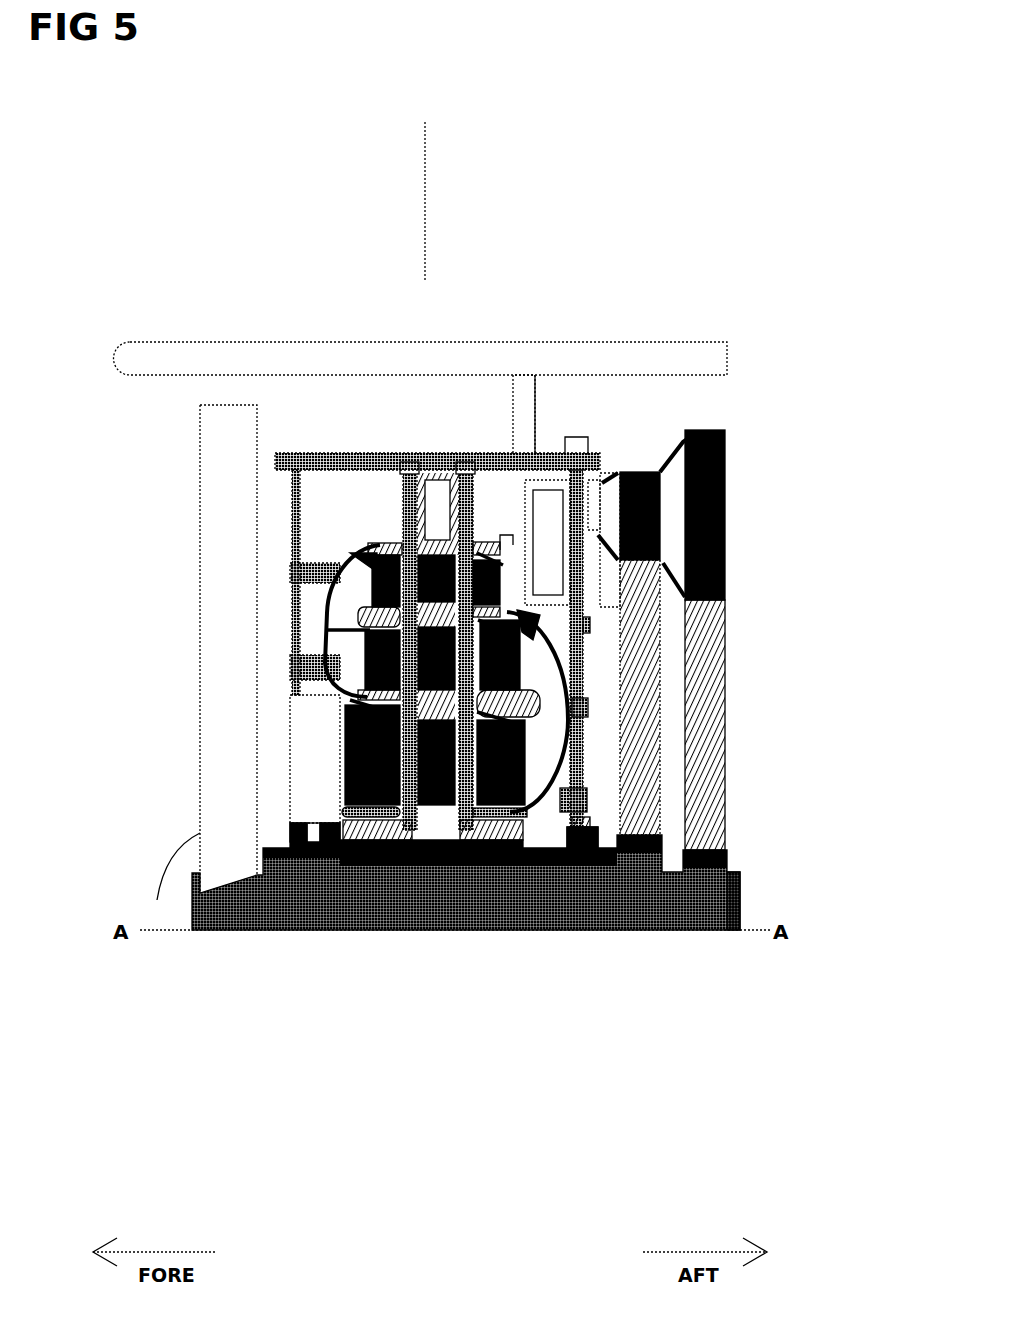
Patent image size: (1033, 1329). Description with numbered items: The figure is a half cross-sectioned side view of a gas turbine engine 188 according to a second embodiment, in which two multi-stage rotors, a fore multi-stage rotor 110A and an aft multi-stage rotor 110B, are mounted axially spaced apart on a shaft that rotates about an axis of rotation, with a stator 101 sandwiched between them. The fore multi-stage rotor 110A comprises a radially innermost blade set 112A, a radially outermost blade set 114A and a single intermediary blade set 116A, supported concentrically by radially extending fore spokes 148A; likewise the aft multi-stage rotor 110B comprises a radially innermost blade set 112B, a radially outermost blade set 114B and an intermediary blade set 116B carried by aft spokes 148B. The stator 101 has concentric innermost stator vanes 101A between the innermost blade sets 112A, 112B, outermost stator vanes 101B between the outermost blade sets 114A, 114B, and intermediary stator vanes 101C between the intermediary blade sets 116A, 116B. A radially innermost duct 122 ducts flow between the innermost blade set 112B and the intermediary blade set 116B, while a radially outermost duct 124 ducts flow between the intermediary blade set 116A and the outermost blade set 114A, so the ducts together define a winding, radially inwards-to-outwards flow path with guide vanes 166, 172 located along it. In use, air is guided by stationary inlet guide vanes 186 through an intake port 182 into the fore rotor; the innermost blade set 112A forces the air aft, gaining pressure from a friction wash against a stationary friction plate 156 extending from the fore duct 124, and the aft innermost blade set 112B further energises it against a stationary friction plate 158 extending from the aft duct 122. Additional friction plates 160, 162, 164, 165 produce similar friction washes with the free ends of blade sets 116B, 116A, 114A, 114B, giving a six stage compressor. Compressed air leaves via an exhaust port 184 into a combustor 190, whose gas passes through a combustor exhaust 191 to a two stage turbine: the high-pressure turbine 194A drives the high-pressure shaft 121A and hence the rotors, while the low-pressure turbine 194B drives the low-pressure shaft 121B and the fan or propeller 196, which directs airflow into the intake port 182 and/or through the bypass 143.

The stator 101 is at (440, 462).
The innermost stator vanes 101A is at (436, 835).
The outermost stator vanes 101B is at (443, 582).
The intermediary stator vanes 101C is at (465, 645).
The fore multi-stage rotor 110A is at (372, 525).
The aft multi-stage rotor 110B is at (490, 517).
The radially innermost blade set 112A is at (370, 768).
The radially innermost blade set 112B is at (525, 682).
The radially outermost blade set 114A is at (340, 590).
The radially outermost blade set 114B is at (620, 835).
The intermediary blade set 116A is at (343, 682).
The intermediary blade set 116B is at (512, 640).
The high-pressure shaft 121A is at (277, 907).
The low-pressure shaft 121B is at (738, 908).
The radially innermost duct 122 is at (513, 727).
The radially outermost duct 124 is at (390, 622).
The bypass 143 is at (430, 400).
The fore spokes 148A is at (392, 855).
The aft spokes 148B is at (462, 848).
The stationary friction plate 156 is at (342, 703).
The stationary friction plate 158 is at (578, 827).
The friction plate 160 is at (535, 617).
The friction plate 162 is at (372, 630).
The friction plate 164 is at (375, 548).
The friction plate 165 is at (568, 530).
The guide vanes 166 is at (588, 618).
The guide vanes 172 is at (360, 545).
The intake port 182 is at (342, 760).
The exhaust port 184 is at (508, 582).
The stationary inlet guide vanes 186 is at (300, 787).
The gas turbine engine 188 is at (432, 185).
The combustor 190 is at (547, 503).
The combustor exhaust 191 is at (612, 512).
The high-pressure turbine 194A is at (662, 473).
The low-pressure turbine 194B is at (725, 503).
The fan or propeller 196 is at (235, 683).